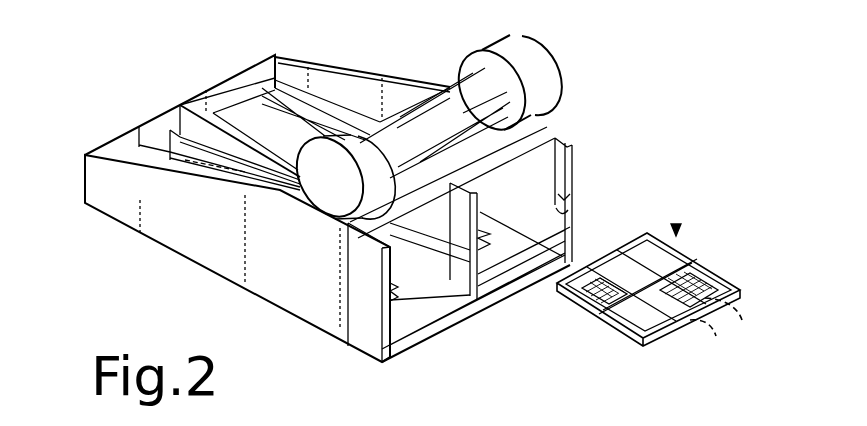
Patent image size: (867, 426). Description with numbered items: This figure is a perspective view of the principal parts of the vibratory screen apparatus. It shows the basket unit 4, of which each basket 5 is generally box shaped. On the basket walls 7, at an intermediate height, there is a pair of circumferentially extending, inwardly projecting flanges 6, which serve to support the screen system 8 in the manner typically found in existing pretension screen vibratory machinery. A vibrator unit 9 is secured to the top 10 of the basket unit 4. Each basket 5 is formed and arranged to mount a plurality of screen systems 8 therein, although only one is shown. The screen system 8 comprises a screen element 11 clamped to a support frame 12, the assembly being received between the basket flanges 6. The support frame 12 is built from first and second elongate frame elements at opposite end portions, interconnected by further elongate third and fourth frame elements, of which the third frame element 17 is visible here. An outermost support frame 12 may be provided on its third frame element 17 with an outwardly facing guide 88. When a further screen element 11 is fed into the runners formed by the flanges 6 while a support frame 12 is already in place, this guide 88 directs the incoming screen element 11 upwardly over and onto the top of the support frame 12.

The basket unit 4 is at (182, 237).
The basket 5 is at (168, 147).
The flanges 6 is at (566, 218).
The basket walls 7 is at (297, 73).
The screen system 8 is at (676, 228).
The vibrator unit 9 is at (530, 70).
The top 10 is at (506, 149).
The screen element 11 is at (702, 268).
The support frame 12 is at (578, 312).
The third frame element 17 is at (652, 332).
The guide 88 is at (712, 328).